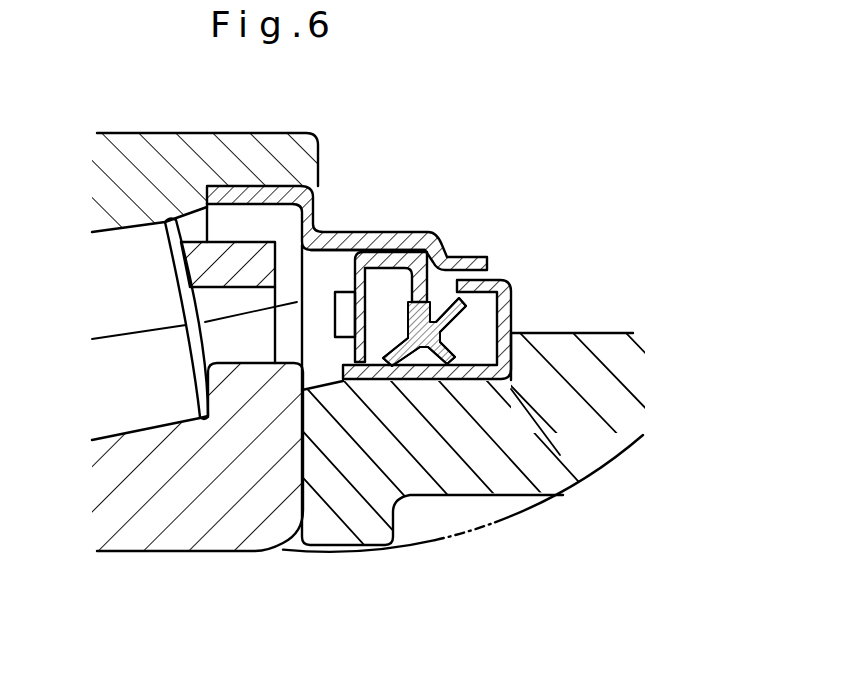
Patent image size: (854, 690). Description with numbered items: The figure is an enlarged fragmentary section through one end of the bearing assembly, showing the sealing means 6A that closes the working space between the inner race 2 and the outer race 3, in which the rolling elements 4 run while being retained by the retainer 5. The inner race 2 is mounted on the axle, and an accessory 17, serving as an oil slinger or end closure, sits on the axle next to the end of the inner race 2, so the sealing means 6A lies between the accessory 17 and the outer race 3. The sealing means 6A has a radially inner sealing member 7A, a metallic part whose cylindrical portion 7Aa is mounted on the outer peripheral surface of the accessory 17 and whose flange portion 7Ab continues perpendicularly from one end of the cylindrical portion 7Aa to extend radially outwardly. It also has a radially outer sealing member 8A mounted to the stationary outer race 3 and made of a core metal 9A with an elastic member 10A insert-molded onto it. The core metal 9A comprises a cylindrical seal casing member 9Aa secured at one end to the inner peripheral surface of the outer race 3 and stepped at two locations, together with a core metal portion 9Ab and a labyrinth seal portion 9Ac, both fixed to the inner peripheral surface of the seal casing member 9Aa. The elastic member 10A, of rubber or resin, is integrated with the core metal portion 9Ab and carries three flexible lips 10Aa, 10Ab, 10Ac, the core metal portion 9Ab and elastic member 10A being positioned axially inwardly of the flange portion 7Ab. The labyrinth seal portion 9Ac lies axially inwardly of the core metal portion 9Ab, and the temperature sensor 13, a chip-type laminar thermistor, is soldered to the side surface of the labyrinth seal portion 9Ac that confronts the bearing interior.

The inner race 2 is at (126, 542).
The outer race 3 is at (140, 142).
The rolling elements 4 is at (120, 291).
The retainer 5 is at (227, 287).
The temperature sensor 13 is at (346, 292).
The sealing means 6A is at (427, 334).
The radially inner sealing member 7A is at (466, 402).
The cylindrical portion 7Aa is at (592, 470).
The flange portion 7Ab is at (513, 323).
The radially outer sealing member 8A is at (427, 334).
The core metal 9A is at (370, 216).
The cylindrical seal casing member 9Aa is at (380, 232).
The core metal portion 9Ab is at (431, 240).
The labyrinth seal portion 9Ac is at (382, 250).
The elastic member 10A is at (509, 384).
The flexible lip 10Aa is at (400, 378).
The flexible lip 10Ab is at (458, 374).
The flexible lip 10Ac is at (436, 318).
The accessory 17 is at (607, 407).